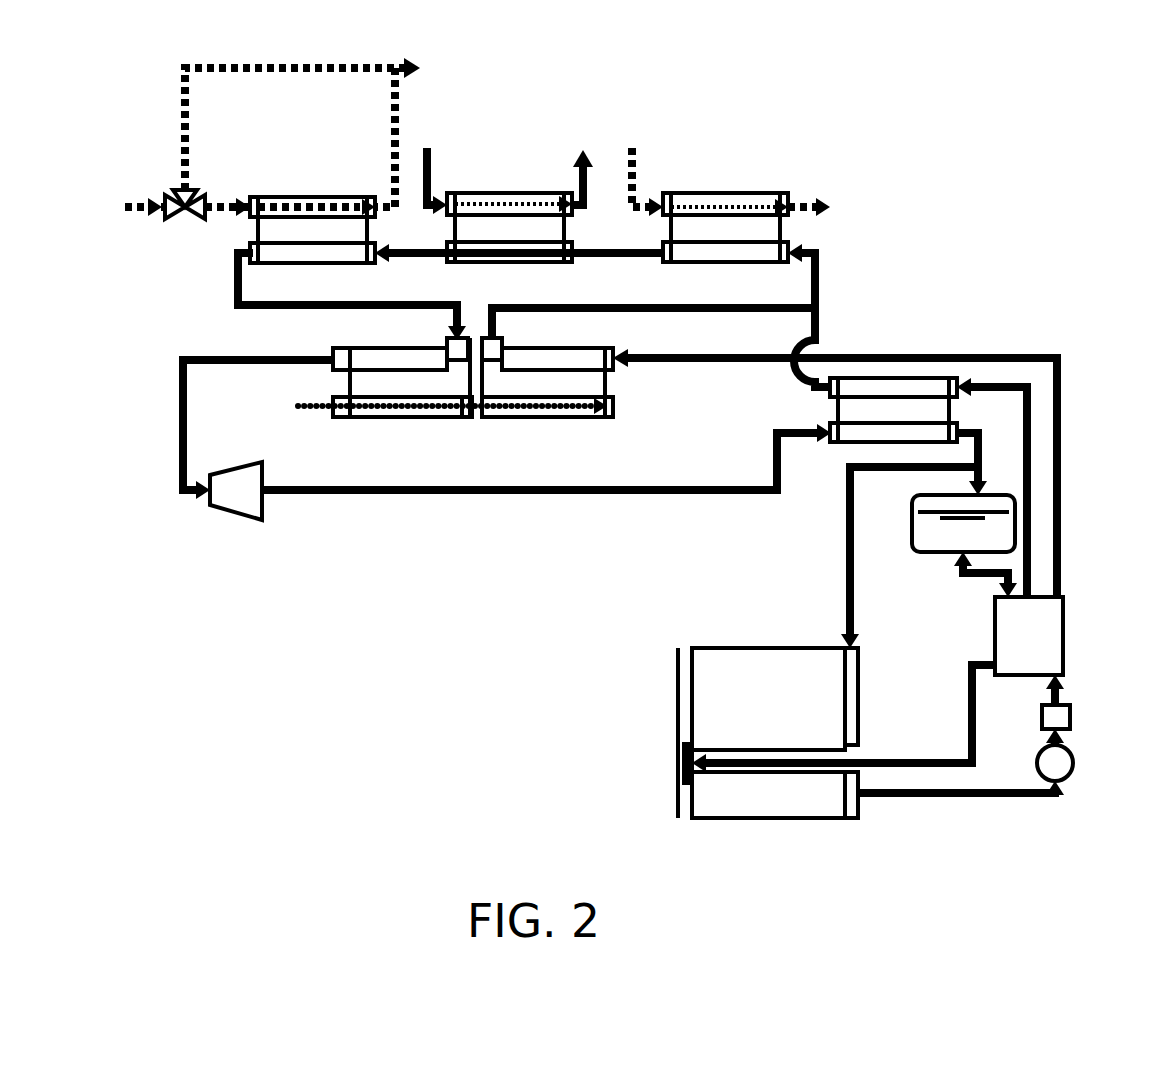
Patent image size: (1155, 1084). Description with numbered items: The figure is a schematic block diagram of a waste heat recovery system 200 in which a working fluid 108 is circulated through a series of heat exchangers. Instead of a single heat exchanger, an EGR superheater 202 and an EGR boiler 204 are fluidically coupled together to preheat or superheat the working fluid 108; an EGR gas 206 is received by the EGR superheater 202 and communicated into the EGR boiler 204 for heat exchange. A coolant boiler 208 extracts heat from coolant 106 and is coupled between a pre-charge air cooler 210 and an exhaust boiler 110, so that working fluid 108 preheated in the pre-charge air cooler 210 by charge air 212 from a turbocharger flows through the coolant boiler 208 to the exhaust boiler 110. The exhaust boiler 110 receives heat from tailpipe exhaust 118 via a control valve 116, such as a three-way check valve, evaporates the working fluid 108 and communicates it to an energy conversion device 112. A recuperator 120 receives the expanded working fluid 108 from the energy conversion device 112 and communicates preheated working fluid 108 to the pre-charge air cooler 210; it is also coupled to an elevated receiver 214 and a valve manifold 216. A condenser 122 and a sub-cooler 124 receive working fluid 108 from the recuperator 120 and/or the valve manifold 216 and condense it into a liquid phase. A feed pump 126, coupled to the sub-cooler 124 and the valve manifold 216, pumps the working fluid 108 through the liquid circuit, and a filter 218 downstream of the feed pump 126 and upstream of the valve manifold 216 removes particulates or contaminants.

The waste heat recovery system 200 is at (998, 238).
The coolant 106 is at (578, 178).
The working fluid 108 is at (295, 306).
The exhaust boiler 110 is at (278, 198).
The energy conversion device 112 is at (233, 511).
The control valve 116 is at (185, 213).
The tailpipe exhaust 118 is at (137, 205).
The recuperator 120 is at (860, 444).
The condenser 122 is at (730, 649).
The sub-cooler 124 is at (730, 820).
The feed pump 126 is at (1074, 766).
The EGR superheater 202 is at (422, 420).
The EGR boiler 204 is at (552, 420).
The EGR gas 206 is at (312, 410).
The coolant boiler 208 is at (466, 198).
The pre-charge air cooler 210 is at (693, 198).
The charge air 212 is at (803, 207).
The elevated receiver 214 is at (940, 553).
The valve manifold 216 is at (1065, 650).
The filter 218 is at (1072, 718).